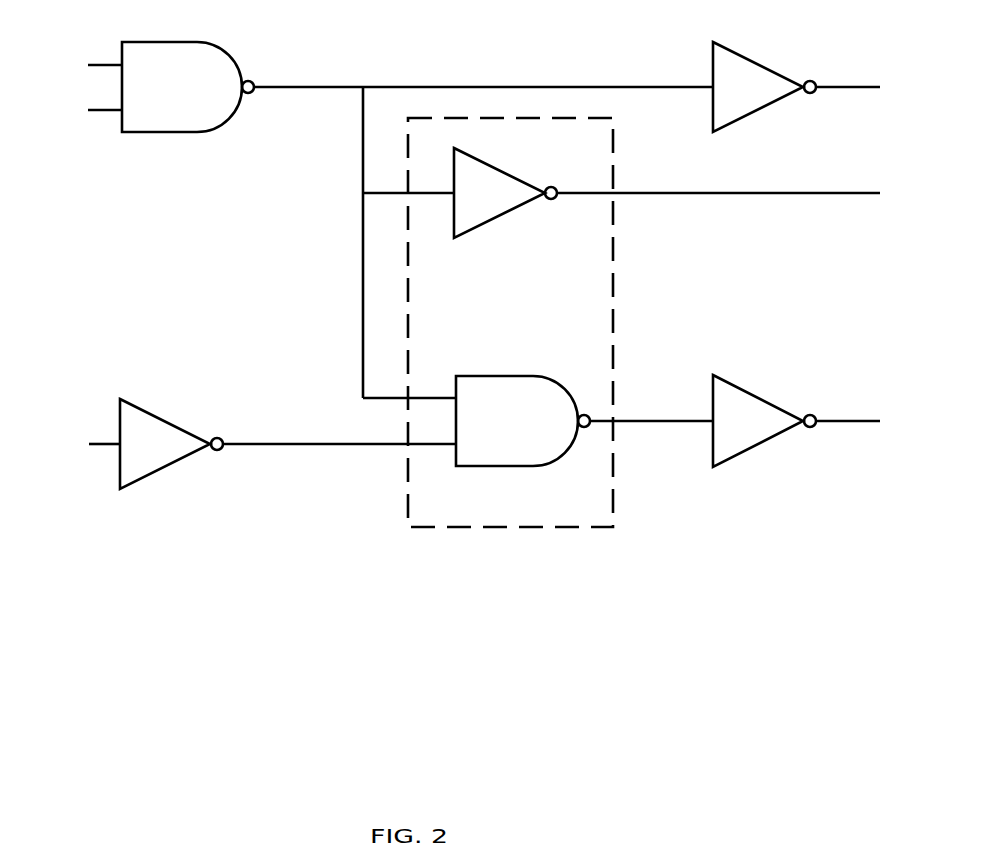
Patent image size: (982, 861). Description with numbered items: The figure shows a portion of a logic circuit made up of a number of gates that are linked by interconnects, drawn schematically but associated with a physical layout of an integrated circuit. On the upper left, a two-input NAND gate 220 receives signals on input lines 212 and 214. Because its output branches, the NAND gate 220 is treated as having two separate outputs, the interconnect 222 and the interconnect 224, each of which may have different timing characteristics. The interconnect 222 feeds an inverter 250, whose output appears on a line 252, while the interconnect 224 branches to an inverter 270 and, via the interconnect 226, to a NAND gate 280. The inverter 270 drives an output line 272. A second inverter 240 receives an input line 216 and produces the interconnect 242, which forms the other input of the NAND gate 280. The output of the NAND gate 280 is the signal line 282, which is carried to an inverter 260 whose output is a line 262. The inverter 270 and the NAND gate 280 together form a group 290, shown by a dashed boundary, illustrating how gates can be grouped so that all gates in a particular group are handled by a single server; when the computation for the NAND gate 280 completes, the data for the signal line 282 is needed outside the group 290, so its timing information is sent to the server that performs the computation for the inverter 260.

The input line 212 is at (110, 63).
The input line 214 is at (110, 112).
The third input signal 216 is at (104, 447).
The NAND gate 220 is at (218, 47).
The output 222 is at (592, 87).
The output 224 is at (392, 196).
The interconnect 226 is at (424, 398).
The gate 240 is at (165, 418).
The interconnect 242 is at (338, 444).
The gate 250 is at (745, 52).
The first output signal 252 is at (850, 87).
The inverter 260 is at (743, 388).
The second output signal 262 is at (850, 421).
The inverter 270 is at (487, 162).
The third output signal 272 is at (758, 193).
The NAND gate 280 is at (553, 380).
The signal line 282 is at (637, 421).
The group 290 is at (510, 527).